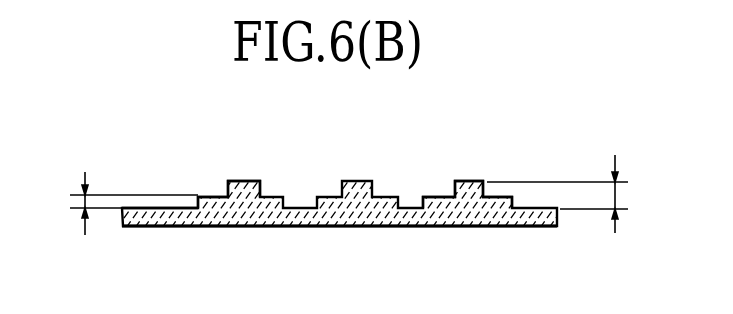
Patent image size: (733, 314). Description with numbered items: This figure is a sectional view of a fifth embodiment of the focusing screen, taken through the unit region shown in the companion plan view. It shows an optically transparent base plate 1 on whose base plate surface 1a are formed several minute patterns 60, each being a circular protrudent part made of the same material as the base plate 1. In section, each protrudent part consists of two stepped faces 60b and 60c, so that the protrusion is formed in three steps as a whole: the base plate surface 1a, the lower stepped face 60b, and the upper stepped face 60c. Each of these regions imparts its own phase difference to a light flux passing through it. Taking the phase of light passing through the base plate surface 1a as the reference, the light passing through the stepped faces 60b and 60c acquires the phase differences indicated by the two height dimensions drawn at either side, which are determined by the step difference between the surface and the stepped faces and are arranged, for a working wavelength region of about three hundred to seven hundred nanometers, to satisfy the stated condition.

The base plate 1 is at (413, 227).
The base plate surface 1a is at (148, 208).
The minute pattern 60 is at (469, 182).
The stepped face 60b is at (208, 197).
The stepped face 60c is at (250, 181).